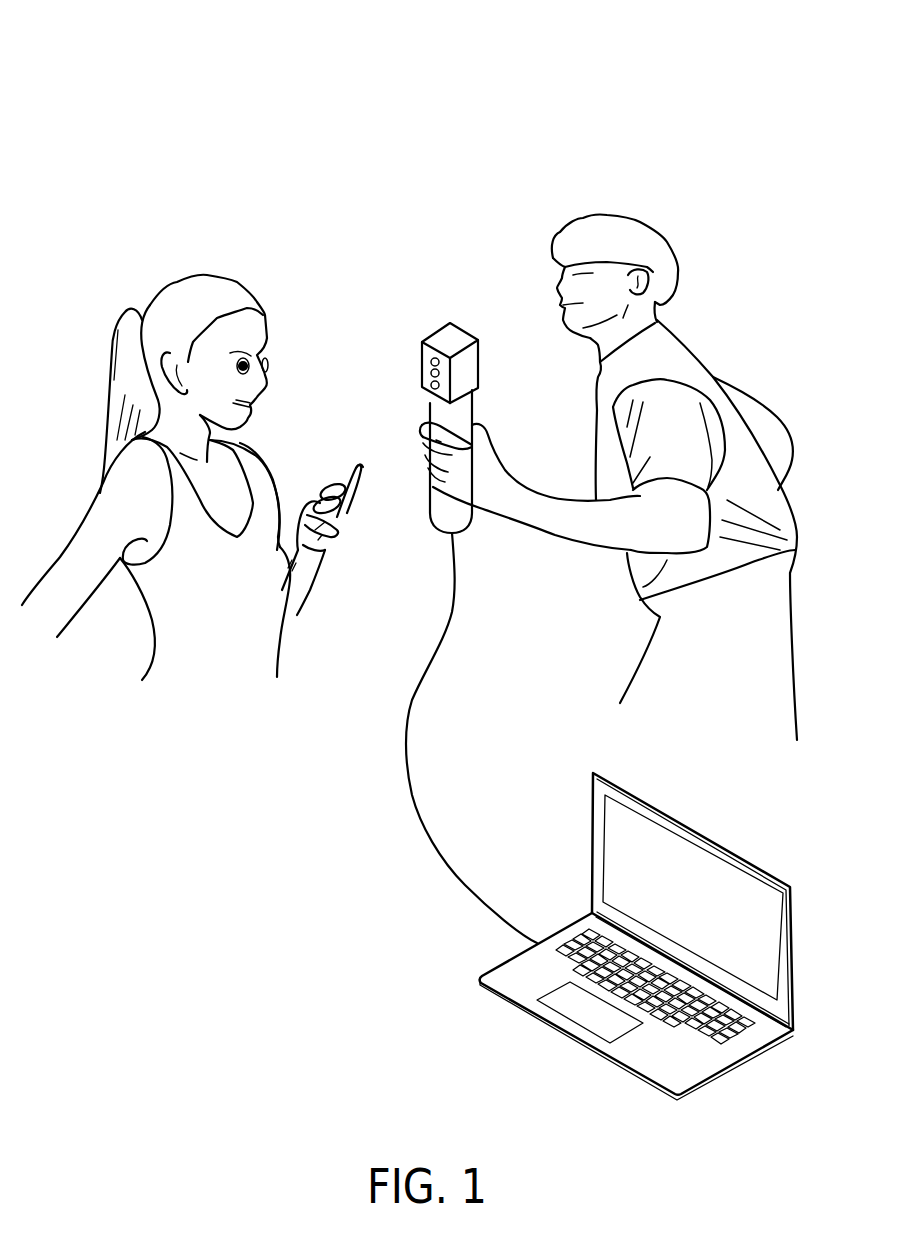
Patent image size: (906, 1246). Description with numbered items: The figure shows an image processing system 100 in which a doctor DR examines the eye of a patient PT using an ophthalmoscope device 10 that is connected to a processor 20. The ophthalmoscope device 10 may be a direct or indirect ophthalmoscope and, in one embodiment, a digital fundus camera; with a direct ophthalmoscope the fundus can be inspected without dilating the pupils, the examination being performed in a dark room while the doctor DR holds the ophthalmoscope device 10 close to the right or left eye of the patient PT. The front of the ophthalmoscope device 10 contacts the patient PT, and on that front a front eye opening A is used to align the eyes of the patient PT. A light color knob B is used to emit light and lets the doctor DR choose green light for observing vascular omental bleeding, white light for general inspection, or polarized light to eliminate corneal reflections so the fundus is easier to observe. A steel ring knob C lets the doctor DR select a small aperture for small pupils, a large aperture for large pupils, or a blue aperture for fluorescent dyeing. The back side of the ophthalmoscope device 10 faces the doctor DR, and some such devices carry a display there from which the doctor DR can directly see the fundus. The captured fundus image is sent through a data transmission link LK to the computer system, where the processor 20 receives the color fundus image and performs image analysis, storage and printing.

The image processing system 100 is at (85, 47).
The patient PT is at (208, 272).
The doctor DR is at (603, 213).
The ophthalmoscope device 10 is at (457, 340).
The front eye opening A is at (431, 361).
The light color knob B is at (431, 372).
The steel ring knob C is at (431, 387).
The data transmission link LK is at (423, 843).
The processor 20 is at (693, 822).